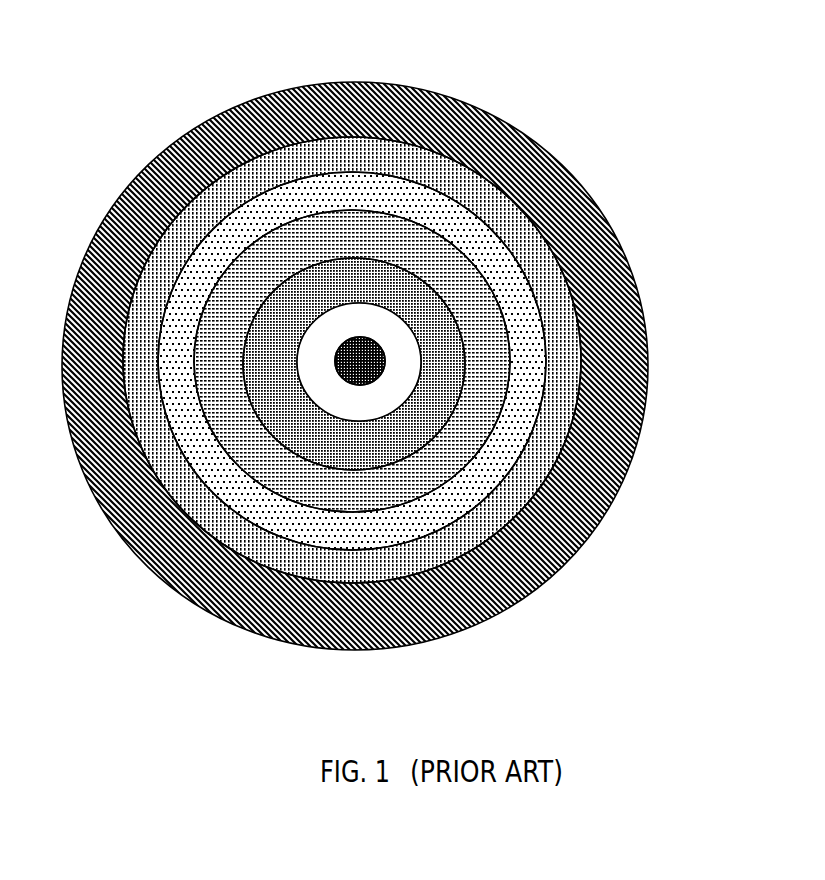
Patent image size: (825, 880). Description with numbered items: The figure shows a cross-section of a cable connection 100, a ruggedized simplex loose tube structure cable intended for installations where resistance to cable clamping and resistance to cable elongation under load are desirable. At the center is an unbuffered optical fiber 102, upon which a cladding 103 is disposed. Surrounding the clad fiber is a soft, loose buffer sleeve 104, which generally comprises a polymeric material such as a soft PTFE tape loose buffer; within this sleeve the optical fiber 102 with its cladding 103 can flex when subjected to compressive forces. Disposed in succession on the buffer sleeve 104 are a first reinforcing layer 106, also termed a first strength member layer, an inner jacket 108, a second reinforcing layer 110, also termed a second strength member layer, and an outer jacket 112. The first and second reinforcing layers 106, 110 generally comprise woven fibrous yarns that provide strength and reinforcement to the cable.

The cable connection 100 is at (698, 79).
The unbuffered optical fiber 102 is at (363, 361).
The cladding 103 is at (398, 362).
The buffer sleeve 104 is at (443, 336).
The first reinforcing layer 106 is at (468, 272).
The inner jacket 108 is at (467, 237).
The second reinforcing layer 110 is at (415, 168).
The outer jacket 112 is at (330, 110).